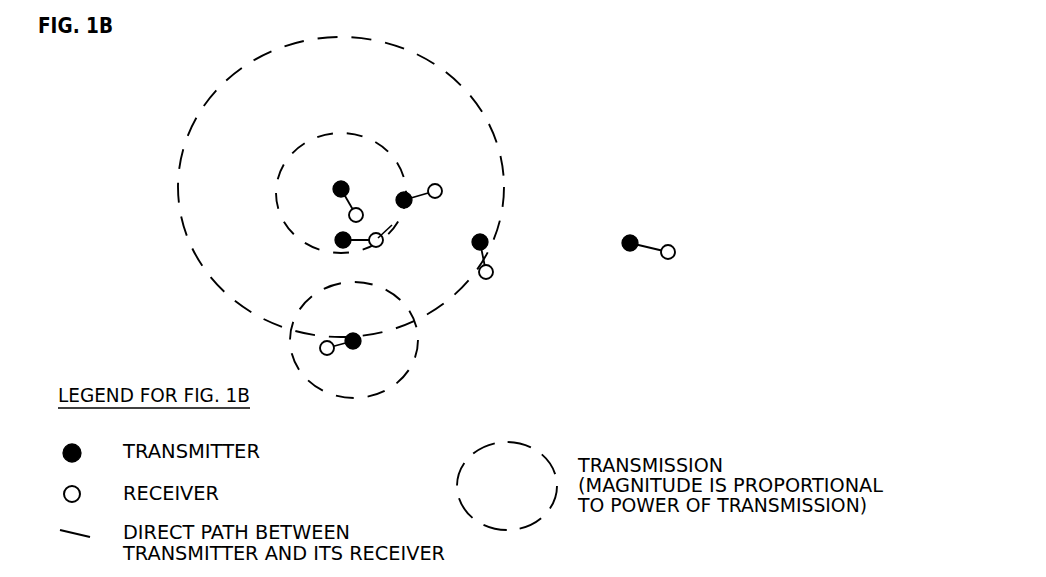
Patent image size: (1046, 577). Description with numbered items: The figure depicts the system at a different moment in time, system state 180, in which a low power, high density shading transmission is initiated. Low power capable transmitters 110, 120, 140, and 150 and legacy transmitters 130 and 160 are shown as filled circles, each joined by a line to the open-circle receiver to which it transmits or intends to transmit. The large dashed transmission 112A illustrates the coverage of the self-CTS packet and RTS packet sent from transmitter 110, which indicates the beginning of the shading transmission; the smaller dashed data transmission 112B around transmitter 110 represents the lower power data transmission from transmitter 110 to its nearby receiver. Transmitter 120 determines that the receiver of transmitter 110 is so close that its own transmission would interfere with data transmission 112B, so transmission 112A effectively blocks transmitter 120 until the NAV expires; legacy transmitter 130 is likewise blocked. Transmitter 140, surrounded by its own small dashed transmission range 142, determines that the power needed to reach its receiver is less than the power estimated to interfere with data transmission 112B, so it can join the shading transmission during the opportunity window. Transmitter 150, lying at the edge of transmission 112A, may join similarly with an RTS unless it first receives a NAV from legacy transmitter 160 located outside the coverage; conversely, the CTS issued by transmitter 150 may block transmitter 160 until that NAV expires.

The transmitter 110 is at (338, 191).
The transmitter 120 is at (419, 206).
The legacy transmitter 130 is at (363, 248).
The transmitter 140 is at (347, 354).
The transmitter 150 is at (498, 256).
The legacy transmitter 160 is at (644, 232).
The transmission 112A is at (195, 122).
The data transmission 112B is at (283, 162).
The transmission range of transmitter 140 142 is at (298, 370).
The system state 180 is at (782, 103).